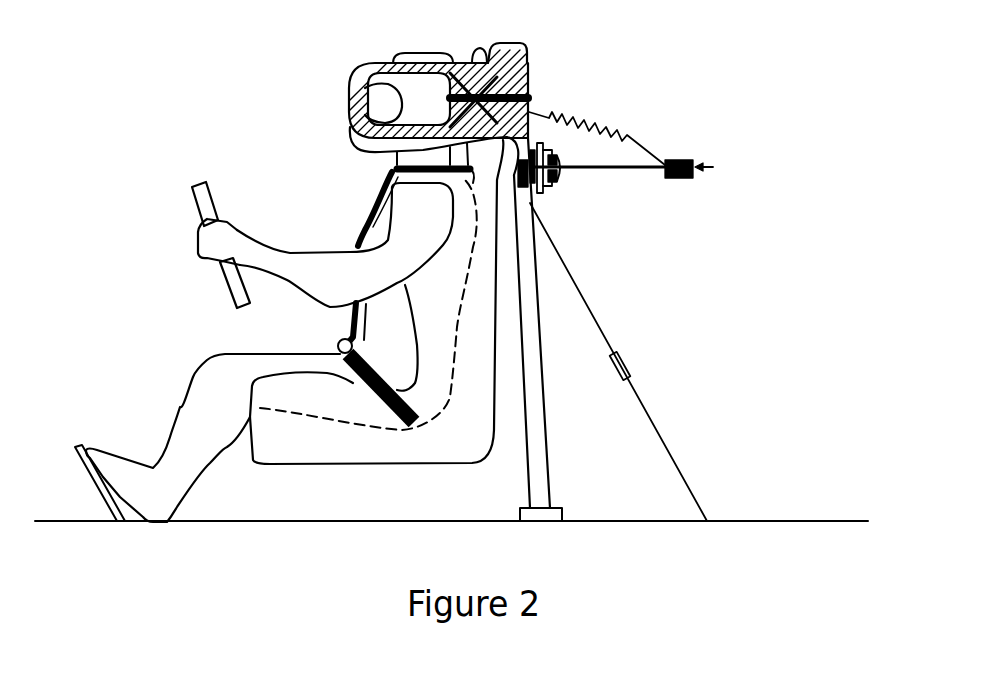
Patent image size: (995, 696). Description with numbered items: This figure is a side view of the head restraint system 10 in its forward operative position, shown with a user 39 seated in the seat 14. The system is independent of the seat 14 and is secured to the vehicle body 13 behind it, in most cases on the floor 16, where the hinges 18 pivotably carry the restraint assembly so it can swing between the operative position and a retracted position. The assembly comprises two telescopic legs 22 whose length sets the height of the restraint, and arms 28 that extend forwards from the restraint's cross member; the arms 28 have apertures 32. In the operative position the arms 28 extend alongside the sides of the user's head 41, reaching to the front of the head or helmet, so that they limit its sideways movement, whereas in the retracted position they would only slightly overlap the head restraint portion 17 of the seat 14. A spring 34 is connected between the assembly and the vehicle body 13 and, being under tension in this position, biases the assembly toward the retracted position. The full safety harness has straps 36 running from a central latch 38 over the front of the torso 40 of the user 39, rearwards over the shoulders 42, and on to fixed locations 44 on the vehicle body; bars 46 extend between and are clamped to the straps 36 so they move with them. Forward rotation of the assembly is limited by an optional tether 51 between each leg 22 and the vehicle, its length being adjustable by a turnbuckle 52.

The head restraint system 10 is at (694, 296).
The vehicle body 13 is at (749, 519).
The seat 14 is at (347, 448).
The floor 16 is at (514, 526).
The head restraint portion 17 is at (483, 52).
The hinges 18 is at (567, 500).
The telescopic legs 22 is at (532, 252).
The arms 28 is at (429, 87).
The apertures 32 is at (363, 107).
The spring 34 is at (603, 116).
The straps 36 is at (358, 181).
The central latch 38 is at (336, 344).
The user 39 is at (259, 352).
The torso 40 is at (393, 317).
The head 41 is at (457, 77).
The shoulders 42 is at (397, 174).
The fixed locations 44 is at (688, 179).
The bars 46 is at (572, 191).
The tether 51 is at (657, 427).
The turnbuckle 52 is at (630, 362).